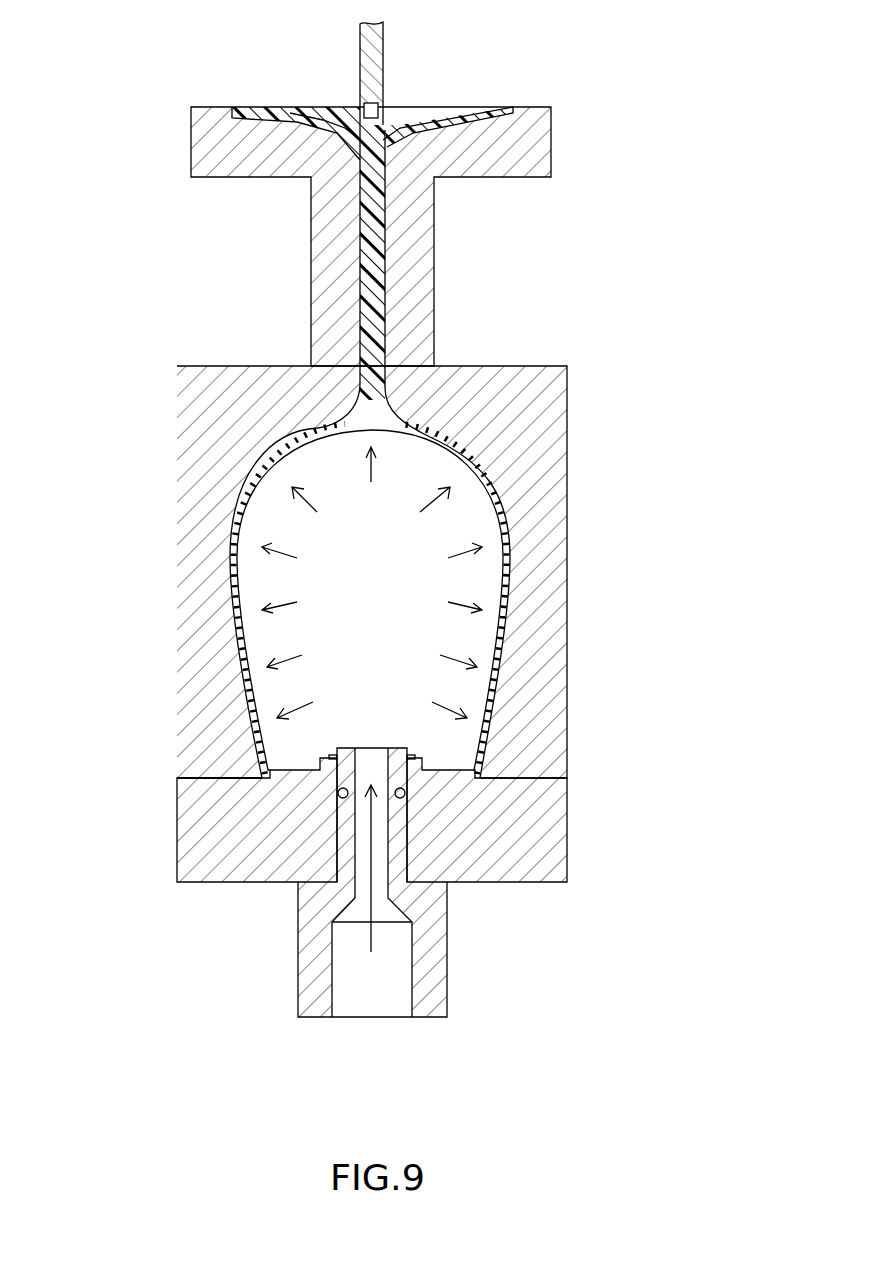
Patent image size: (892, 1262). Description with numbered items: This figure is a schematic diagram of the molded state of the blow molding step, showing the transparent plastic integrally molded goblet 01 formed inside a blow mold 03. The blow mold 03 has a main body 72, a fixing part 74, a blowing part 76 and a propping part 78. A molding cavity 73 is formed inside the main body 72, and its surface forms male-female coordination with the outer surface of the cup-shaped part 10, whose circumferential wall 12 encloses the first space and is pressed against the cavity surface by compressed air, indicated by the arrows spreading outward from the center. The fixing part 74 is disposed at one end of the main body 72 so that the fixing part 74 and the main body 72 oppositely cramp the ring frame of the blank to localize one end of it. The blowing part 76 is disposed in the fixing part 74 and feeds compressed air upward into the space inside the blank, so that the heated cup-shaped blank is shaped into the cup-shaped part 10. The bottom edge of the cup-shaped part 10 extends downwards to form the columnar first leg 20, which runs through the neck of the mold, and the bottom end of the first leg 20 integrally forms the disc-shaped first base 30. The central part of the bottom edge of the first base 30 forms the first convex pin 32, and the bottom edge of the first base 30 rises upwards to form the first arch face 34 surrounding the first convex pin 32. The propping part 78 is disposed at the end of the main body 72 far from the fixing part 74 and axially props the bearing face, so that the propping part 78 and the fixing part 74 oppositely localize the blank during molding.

The blow mold 03 is at (590, 105).
The propping part 78 is at (382, 53).
The first base 30 is at (287, 110).
The first arch face 34 is at (328, 118).
The first convex pin 32 is at (387, 133).
The transparent plastic integrally molded goblet 01 is at (360, 325).
The first leg 20 is at (385, 313).
The main body 72 is at (177, 523).
The molding cavity 73 is at (512, 580).
The cup-shaped part 10 is at (227, 628).
The circumferential wall 12 is at (508, 638).
The fixing part 74 is at (567, 848).
The blowing part 76 is at (298, 948).